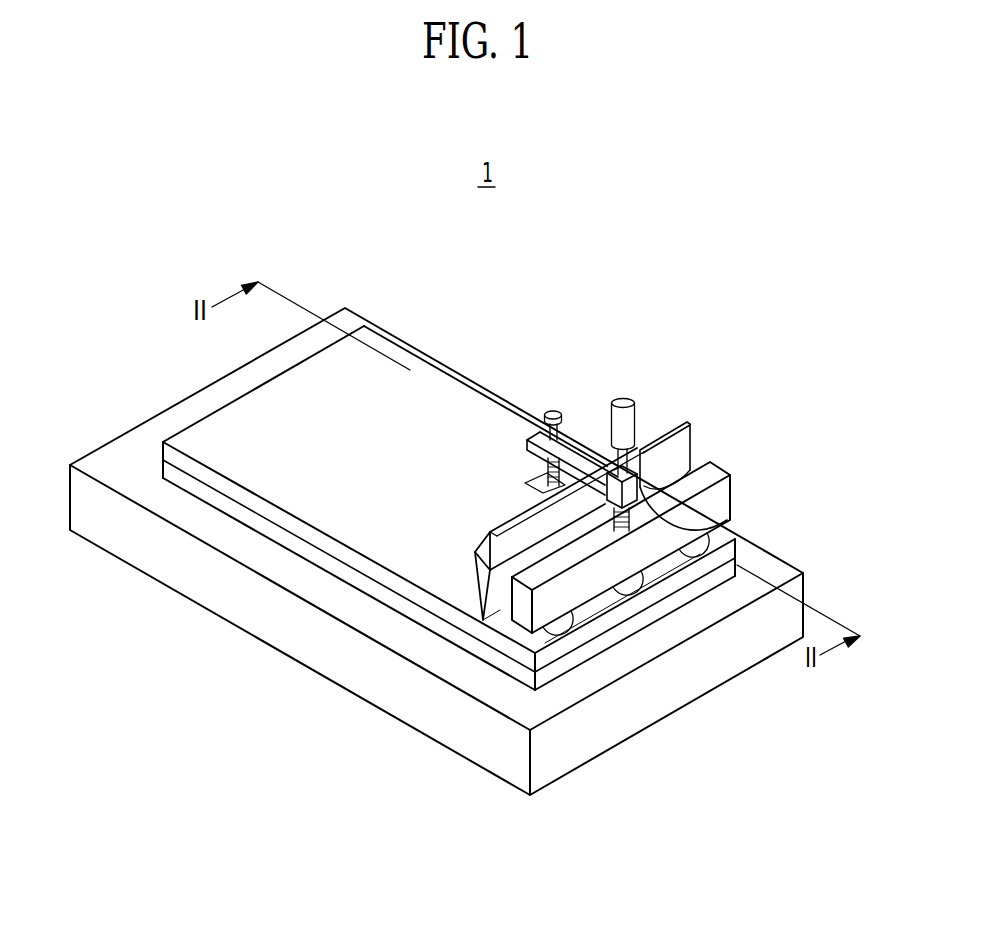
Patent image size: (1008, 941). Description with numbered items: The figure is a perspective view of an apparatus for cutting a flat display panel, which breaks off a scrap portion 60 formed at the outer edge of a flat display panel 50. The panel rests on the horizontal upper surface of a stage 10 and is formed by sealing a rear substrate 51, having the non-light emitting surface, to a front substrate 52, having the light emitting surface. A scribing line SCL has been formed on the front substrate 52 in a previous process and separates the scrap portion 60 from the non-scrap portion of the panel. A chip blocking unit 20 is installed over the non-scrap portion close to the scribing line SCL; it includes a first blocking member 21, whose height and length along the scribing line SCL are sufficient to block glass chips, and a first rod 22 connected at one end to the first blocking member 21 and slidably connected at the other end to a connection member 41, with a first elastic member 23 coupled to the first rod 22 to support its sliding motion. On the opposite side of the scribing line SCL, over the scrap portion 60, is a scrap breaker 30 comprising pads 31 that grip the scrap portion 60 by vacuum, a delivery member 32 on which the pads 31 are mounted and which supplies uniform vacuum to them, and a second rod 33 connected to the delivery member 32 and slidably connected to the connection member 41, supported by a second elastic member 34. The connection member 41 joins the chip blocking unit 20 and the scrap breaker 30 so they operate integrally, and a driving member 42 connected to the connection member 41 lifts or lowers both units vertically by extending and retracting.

The stage 10 is at (480, 738).
The chip blocking unit 20 is at (524, 454).
The first blocking member 21 is at (472, 575).
The first rod 22 is at (526, 435).
The first elastic member 23 is at (543, 462).
The scrap breaker 30 is at (671, 572).
The pad 31 is at (742, 583).
The delivery member 32 is at (723, 500).
The second rod 33 is at (688, 537).
The second elastic member 34 is at (692, 465).
The connection member 41 is at (574, 445).
The driving member 42 is at (617, 400).
The flat display panel 50 is at (422, 508).
The rear substrate 51 is at (330, 563).
The front substrate 52 is at (275, 515).
The scrap portion 60 is at (553, 655).
The scribing line SCL is at (486, 637).